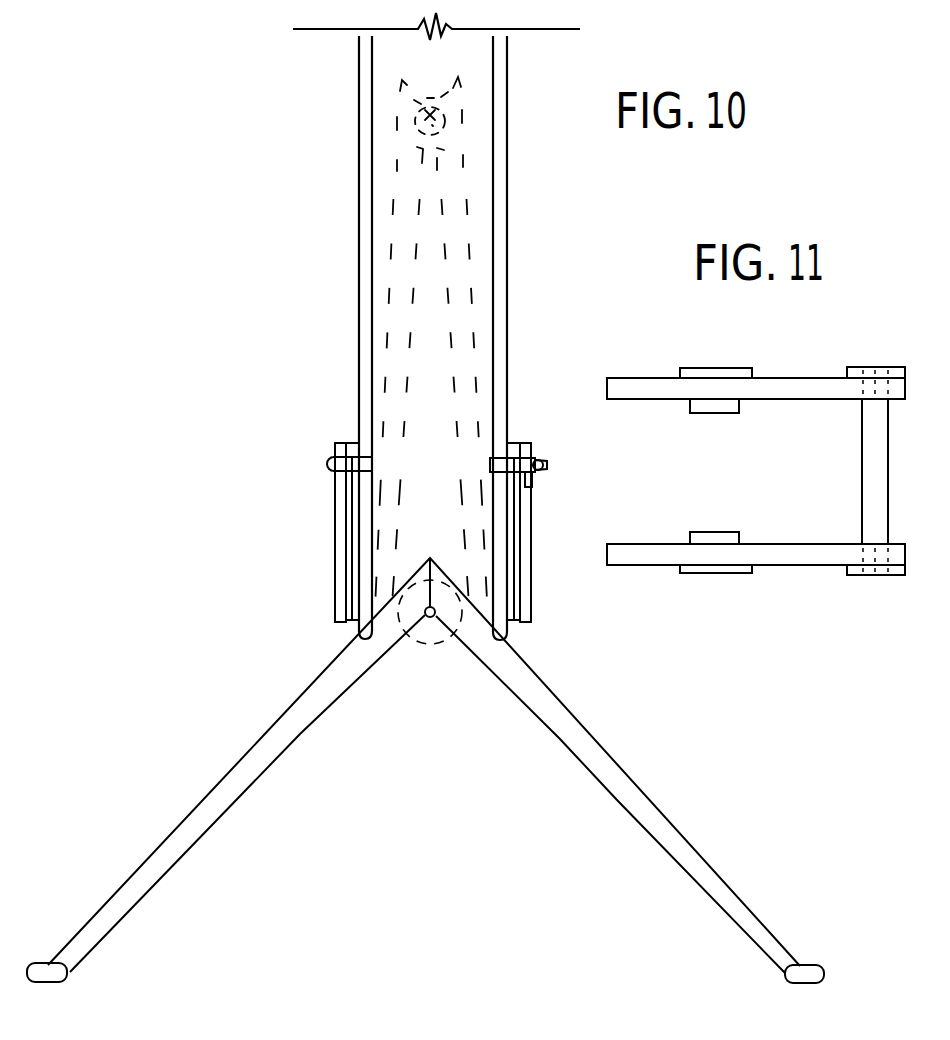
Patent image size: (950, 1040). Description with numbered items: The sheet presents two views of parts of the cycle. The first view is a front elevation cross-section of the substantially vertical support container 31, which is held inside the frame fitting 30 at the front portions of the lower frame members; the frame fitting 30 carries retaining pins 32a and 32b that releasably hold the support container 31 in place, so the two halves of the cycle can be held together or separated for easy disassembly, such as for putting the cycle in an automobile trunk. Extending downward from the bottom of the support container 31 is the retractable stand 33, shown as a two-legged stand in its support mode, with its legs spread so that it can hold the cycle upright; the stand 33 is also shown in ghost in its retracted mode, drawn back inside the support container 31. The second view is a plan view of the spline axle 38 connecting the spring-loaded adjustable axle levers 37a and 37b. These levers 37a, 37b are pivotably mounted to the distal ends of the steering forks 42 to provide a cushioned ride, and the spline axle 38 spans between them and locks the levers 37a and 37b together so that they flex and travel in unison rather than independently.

In FIG. 10, the frame fitting 30 is at (333, 572).
In FIG. 10, the substantially vertical support container 31 is at (352, 233).
In FIG. 10, the retaining pin 32a is at (327, 463).
In FIG. 10, the retaining pin 32b is at (550, 464).
In FIG. 10, the retractable stand 33 is at (275, 713).
In FIG. 11, the spring-loaded adjustable axle lever 37a is at (812, 570).
In FIG. 11, the spring-loaded adjustable axle lever 37b is at (806, 375).
In FIG. 11, the spline axle 38 is at (858, 468).
In FIG. 11, the steering forks 42 is at (720, 416).